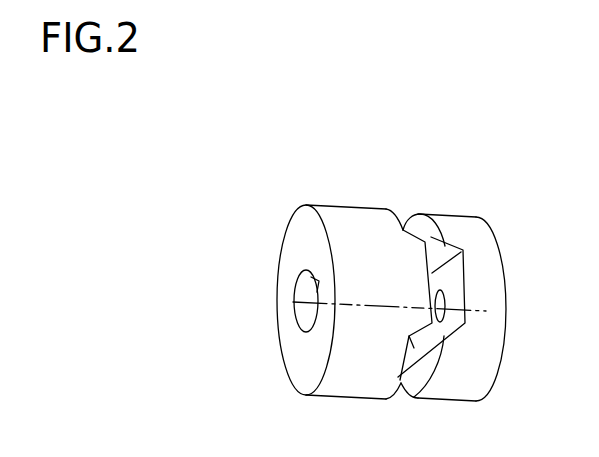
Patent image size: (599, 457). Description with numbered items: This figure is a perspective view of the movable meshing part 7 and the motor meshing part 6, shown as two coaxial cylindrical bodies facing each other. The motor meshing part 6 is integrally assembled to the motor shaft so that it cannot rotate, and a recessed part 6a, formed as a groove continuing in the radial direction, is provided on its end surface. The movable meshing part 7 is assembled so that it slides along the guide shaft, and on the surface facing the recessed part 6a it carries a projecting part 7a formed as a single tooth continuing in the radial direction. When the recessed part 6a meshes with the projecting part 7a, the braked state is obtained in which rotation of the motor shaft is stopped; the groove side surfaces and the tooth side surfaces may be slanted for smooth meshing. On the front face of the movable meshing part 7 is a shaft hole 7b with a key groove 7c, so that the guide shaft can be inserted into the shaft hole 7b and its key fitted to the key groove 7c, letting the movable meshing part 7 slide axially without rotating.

The motor meshing part 6 is at (468, 216).
The recessed part 6a is at (465, 255).
The movable meshing part 7 is at (360, 207).
The projecting part 7a is at (445, 242).
The shaft hole 7b is at (299, 295).
The key groove 7c is at (317, 294).